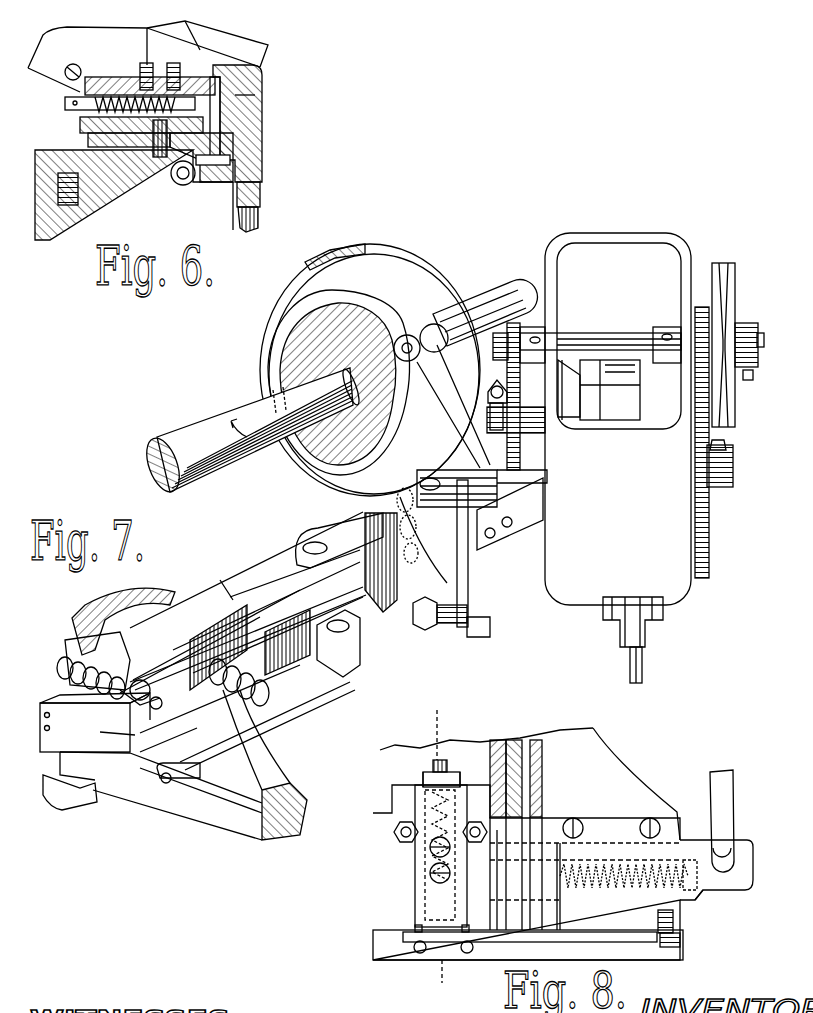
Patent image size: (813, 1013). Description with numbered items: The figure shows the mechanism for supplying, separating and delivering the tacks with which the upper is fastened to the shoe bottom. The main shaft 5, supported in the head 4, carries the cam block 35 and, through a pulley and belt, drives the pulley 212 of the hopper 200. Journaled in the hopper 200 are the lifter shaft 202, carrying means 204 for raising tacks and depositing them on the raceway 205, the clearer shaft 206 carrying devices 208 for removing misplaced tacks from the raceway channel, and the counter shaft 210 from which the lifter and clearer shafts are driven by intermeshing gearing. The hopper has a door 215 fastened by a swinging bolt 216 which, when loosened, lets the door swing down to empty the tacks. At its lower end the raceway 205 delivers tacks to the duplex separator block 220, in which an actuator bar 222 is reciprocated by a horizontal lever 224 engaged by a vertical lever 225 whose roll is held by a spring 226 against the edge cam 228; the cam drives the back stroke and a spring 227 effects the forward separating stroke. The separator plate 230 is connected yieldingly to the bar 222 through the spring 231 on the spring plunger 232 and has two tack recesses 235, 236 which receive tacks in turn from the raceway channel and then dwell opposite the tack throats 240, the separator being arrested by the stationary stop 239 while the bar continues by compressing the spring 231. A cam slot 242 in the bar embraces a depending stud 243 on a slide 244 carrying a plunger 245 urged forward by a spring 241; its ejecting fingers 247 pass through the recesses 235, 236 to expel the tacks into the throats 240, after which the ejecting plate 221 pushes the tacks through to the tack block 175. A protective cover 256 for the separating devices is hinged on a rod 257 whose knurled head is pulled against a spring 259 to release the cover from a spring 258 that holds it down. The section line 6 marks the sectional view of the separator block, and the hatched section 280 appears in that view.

In FIG. 7, the head 4 is at (280, 743).
In FIG. 8, the head 4 is at (593, 743).
In FIG. 7, the shaft 5 is at (172, 440).
In FIG. 7, the cam block 35 is at (400, 262).
In FIG. 7, the tack block 175 is at (50, 793).
In FIG. 7, the hopper 200 is at (683, 248).
In FIG. 7, the lifter shaft 202 is at (722, 472).
In FIG. 7, the means for raising tacks 204 is at (622, 400).
In FIG. 6, the raceway 205 is at (200, 50).
In FIG. 7, the raceway 205 is at (530, 520).
In FIG. 8, the raceway 205 is at (533, 747).
In FIG. 7, the clearer shaft 206 is at (500, 525).
In FIG. 7, the devices for removing misplaced tacks 208 is at (573, 357).
In FIG. 7, the counter shaft 210 is at (605, 340).
In FIG. 7, the pulley 212 is at (733, 268).
In FIG. 7, the door 215 is at (655, 638).
In FIG. 7, the swinging bolt 216 is at (642, 673).
In FIG. 6, the duplex separator block 220 is at (260, 83).
In FIG. 7, the duplex separator block 220 is at (58, 707).
In FIG. 6, the ejecting plate 221 is at (260, 67).
In FIG. 8, the ejecting plate 221 is at (403, 888).
In FIG. 6, the actuator bar 222 is at (197, 182).
In FIG. 7, the actuator bar 222 is at (177, 773).
In FIG. 8, the actuator bar 222 is at (747, 868).
In FIG. 7, the horizontal lever 224 is at (292, 688).
In FIG. 8, the horizontal lever 224 is at (720, 780).
In FIG. 7, the vertical lever 225 is at (462, 587).
In FIG. 7, the spring 226 is at (397, 477).
In FIG. 7, the spring 227 is at (280, 683).
In FIG. 7, the edge cam 228 is at (412, 332).
In FIG. 6, the separator plate 230 is at (233, 113).
In FIG. 7, the separator plate 230 is at (120, 737).
In FIG. 8, the separator plate 230 is at (567, 930).
In FIG. 8, the spring 231 is at (633, 870).
In FIG. 6, the spring plunger 232 is at (180, 190).
In FIG. 8, the spring plunger 232 is at (693, 880).
In FIG. 8, the tack recess 235 is at (527, 933).
In FIG. 8, the tack recess 236 is at (583, 930).
In FIG. 8, the stationary stop 239 is at (503, 933).
In FIG. 6, the tack throats 240 is at (262, 221).
In FIG. 7, the tack throats 240 is at (65, 770).
In FIG. 8, the tack throats 240 is at (467, 953).
In FIG. 6, the spring 241 is at (110, 72).
In FIG. 8, the cam slot 242 is at (570, 867).
In FIG. 6, the depending stud 243 is at (163, 157).
In FIG. 6, the slide 244 is at (85, 128).
In FIG. 8, the slide 244 is at (417, 780).
In FIG. 6, the plunger 245 is at (65, 103).
In FIG. 8, the plunger 245 is at (437, 757).
In FIG. 6, the ejecting fingers 247 is at (255, 95).
In FIG. 8, the ejecting fingers 247 is at (465, 927).
In FIG. 7, the protective cover 256 is at (70, 641).
In FIG. 7, the rod 257 is at (63, 680).
In FIG. 7, the spring 258 is at (143, 640).
In FIG. 7, the spring 259 is at (106, 691).
In FIG. 6, the arm 280 is at (230, 183).
In FIG. 8, the section line 6 is at (447, 711).